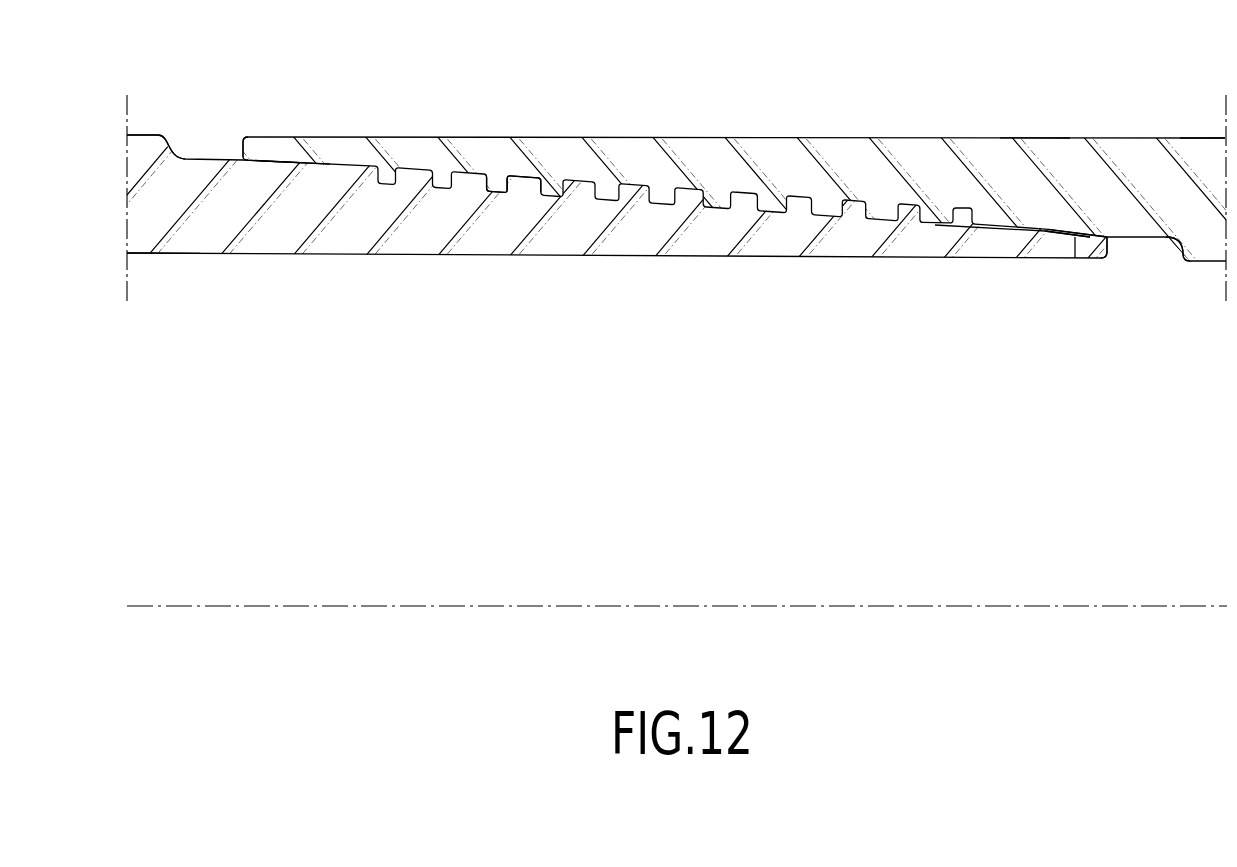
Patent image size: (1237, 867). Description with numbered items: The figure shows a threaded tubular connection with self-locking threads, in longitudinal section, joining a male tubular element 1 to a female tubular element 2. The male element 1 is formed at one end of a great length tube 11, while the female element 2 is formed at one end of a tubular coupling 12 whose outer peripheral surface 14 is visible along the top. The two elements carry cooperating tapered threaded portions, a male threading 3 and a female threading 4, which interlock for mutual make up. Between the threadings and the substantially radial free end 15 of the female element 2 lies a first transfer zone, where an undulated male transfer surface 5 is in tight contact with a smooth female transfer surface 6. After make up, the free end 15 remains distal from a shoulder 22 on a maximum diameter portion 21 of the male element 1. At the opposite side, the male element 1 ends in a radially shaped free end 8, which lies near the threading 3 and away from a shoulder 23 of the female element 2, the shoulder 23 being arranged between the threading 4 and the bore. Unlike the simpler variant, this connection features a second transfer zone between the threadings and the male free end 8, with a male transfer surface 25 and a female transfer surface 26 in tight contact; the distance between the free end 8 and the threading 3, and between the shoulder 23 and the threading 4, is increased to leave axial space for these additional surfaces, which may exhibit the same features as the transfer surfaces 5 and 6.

The male tubular element 1 is at (848, 257).
The female tubular element 2 is at (862, 138).
The male threading 3 is at (527, 183).
The female threading 4 is at (498, 187).
The male transfer surface 5 is at (291, 165).
The female transfer surface 6 is at (273, 163).
The male free end 8 is at (1108, 246).
The tube 11 is at (145, 255).
The tubular coupling 12 is at (1211, 138).
The outer peripheral surface 14 is at (1035, 138).
The free end of the female element 15 is at (243, 150).
The maximum diameter portion 21 is at (146, 140).
The shoulder 22 is at (176, 133).
The female shoulder 23 is at (1181, 257).
The male transfer surface 25 is at (1092, 235).
The female transfer surface 26 is at (1075, 237).